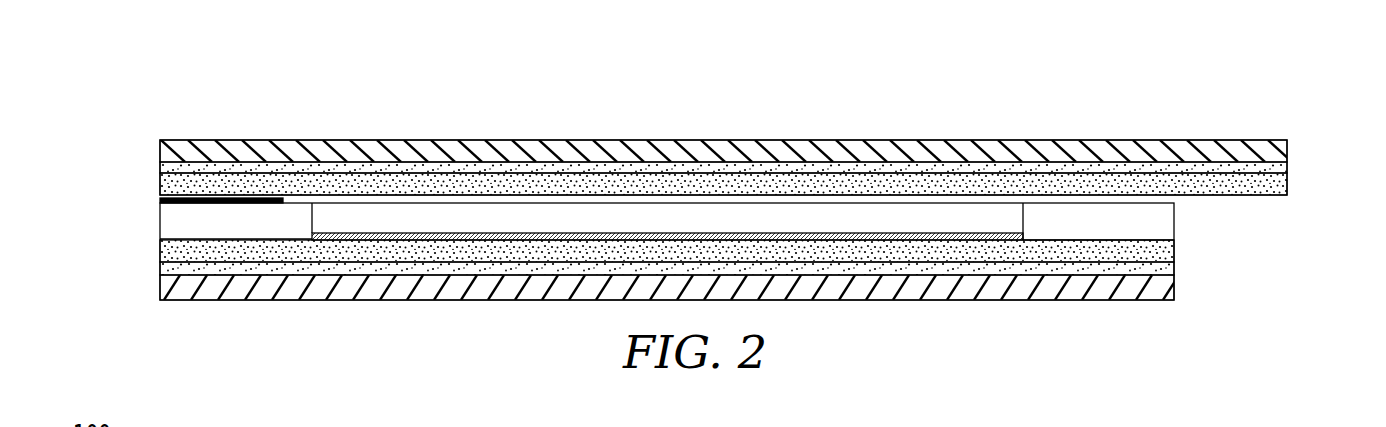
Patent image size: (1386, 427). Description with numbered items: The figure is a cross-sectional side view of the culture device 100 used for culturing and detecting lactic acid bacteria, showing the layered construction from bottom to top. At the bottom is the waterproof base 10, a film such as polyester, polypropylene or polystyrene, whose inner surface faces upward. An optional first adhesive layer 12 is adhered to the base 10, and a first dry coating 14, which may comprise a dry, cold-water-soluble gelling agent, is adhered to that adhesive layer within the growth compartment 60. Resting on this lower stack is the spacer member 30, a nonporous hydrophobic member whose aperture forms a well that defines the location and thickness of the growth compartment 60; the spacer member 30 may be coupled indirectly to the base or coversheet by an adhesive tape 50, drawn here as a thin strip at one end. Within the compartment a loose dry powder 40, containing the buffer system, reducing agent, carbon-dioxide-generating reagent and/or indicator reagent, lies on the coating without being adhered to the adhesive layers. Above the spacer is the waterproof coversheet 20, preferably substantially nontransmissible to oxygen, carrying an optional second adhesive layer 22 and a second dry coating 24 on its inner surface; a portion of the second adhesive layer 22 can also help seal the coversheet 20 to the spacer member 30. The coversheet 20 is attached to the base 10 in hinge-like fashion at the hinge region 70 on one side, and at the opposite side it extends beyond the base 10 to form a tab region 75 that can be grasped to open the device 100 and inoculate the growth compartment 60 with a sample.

The culture device 100 is at (185, 58).
The waterproof base 10 is at (898, 300).
The first adhesive layer 12 is at (160, 265).
The first dry coating 14 is at (1174, 248).
The waterproof coversheet 20 is at (821, 140).
The second adhesive layer 22 is at (160, 165).
The second dry coating 24 is at (1287, 184).
The spacer member 30 is at (160, 221).
The dry powder 40 is at (434, 233).
The adhesive tape 50 is at (268, 199).
The growth compartment 60 is at (513, 220).
The hinge region 70 is at (307, 130).
The tab region 75 is at (1287, 130).